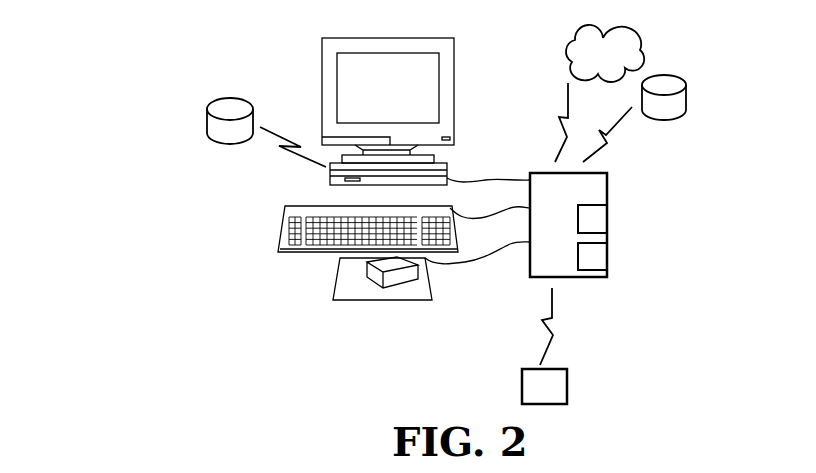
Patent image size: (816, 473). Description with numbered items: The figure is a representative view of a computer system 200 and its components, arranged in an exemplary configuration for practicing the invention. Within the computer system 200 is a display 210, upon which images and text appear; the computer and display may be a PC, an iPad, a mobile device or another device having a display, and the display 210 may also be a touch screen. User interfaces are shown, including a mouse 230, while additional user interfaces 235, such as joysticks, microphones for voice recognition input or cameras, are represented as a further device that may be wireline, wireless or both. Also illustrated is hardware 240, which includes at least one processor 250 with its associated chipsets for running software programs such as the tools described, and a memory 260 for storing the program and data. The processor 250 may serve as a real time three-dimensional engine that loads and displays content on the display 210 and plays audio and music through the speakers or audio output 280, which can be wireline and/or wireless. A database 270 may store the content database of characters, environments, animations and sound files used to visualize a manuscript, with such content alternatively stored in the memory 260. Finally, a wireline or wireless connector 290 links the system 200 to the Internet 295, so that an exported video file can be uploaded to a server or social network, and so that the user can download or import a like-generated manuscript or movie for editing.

The computer system 200 is at (262, 284).
The display 210 is at (454, 75).
The mouse 230 is at (395, 275).
The additional user interfaces 235 is at (522, 390).
The hardware 240 is at (572, 277).
The processor 250 is at (607, 213).
The memory 260 is at (607, 255).
The database 270 is at (687, 100).
The speakers or audio output 280 is at (207, 123).
The connector 290 is at (568, 105).
The Internet 295 is at (597, 43).